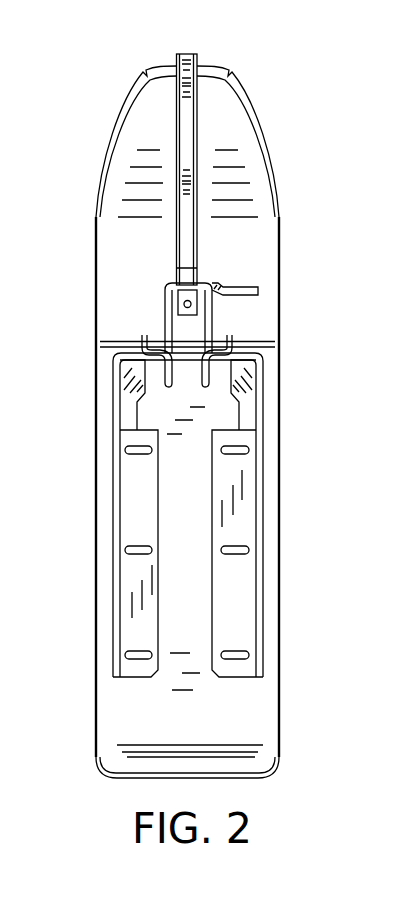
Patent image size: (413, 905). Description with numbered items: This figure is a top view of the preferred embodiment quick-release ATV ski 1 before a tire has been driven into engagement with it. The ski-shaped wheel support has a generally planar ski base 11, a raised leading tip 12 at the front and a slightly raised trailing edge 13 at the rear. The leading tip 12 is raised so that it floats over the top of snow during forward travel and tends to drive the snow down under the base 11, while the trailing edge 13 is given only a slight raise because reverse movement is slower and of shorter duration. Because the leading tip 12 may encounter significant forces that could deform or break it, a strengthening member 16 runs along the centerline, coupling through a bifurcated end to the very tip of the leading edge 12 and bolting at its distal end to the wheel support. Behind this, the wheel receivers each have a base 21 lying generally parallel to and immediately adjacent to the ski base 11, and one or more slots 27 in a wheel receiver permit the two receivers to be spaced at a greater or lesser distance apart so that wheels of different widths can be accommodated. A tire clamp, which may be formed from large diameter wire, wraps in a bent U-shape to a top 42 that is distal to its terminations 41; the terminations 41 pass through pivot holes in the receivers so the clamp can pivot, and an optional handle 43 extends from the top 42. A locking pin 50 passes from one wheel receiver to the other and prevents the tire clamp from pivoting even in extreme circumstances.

The quick-release ATV ski 1 is at (75, 140).
The raised leading tip 12 is at (223, 103).
The strengthening member 16 is at (190, 137).
The top 42 is at (172, 288).
The handle 43 is at (259, 290).
The terminations 41 is at (120, 341).
The locking pin 50 is at (189, 360).
The base 21 is at (152, 510).
The slots 27 is at (130, 555).
The ski base 11 is at (152, 723).
The trailing edge 13 is at (106, 777).